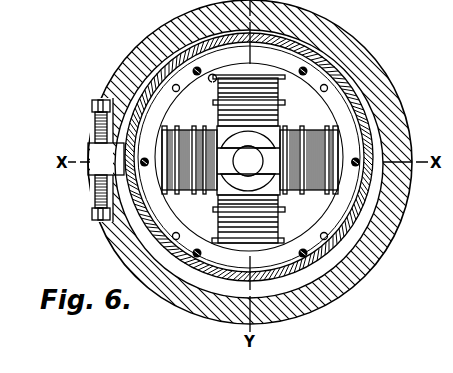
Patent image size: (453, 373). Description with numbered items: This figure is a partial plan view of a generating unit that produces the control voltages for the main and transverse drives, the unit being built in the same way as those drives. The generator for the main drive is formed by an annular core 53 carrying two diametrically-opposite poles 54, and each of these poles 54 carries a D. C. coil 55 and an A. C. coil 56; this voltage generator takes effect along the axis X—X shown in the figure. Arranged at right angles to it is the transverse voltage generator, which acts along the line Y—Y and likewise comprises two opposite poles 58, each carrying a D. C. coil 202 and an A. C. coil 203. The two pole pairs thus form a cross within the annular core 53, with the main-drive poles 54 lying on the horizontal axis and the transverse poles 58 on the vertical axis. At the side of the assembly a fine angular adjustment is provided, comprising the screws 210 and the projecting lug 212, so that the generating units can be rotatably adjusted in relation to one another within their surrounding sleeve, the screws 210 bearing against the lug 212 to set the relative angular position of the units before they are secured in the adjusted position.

The annular core 53 is at (160, 221).
The poles 54 is at (232, 163).
The D. C. coil 55 is at (303, 129).
The A. C. coil 56 is at (326, 146).
The poles 58 is at (271, 86).
The D. C. coil 202 is at (222, 118).
The A. C. coil 203 is at (213, 79).
The screws 210 is at (92, 213).
The projecting lug 212 is at (88, 172).